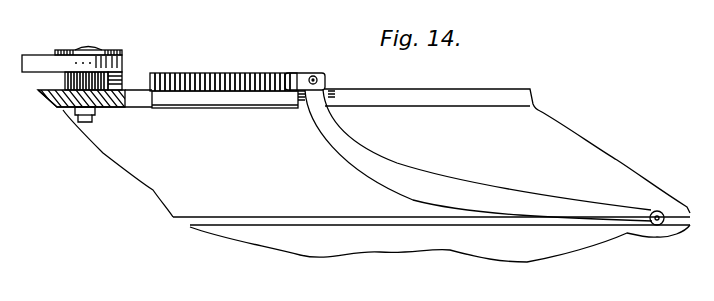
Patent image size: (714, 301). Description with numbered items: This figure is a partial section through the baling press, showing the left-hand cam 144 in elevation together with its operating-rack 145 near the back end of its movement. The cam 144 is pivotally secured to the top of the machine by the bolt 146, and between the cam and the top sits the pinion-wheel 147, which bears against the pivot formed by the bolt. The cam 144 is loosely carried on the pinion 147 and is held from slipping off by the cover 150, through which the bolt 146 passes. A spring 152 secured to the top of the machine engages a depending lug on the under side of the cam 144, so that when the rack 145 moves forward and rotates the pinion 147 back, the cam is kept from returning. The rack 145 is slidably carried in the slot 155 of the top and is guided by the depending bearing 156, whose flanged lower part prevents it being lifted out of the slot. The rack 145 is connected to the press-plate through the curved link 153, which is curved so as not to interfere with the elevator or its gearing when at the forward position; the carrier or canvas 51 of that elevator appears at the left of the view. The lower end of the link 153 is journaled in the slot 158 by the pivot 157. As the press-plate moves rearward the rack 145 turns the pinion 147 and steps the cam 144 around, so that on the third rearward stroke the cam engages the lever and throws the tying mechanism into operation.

The cam 144 is at (37, 63).
The bolt 146 is at (85, 47).
The cover 150 is at (115, 55).
The spring 152 is at (123, 77).
The carrier or canvas 51 is at (60, 78).
The pinion-wheel 147 is at (57, 100).
The operating-rack 145 is at (240, 73).
The depending bearing 156 is at (207, 100).
The slot 155 is at (483, 92).
The curved link 153 is at (397, 167).
The pivot 157 is at (661, 226).
The slot 158 is at (323, 221).